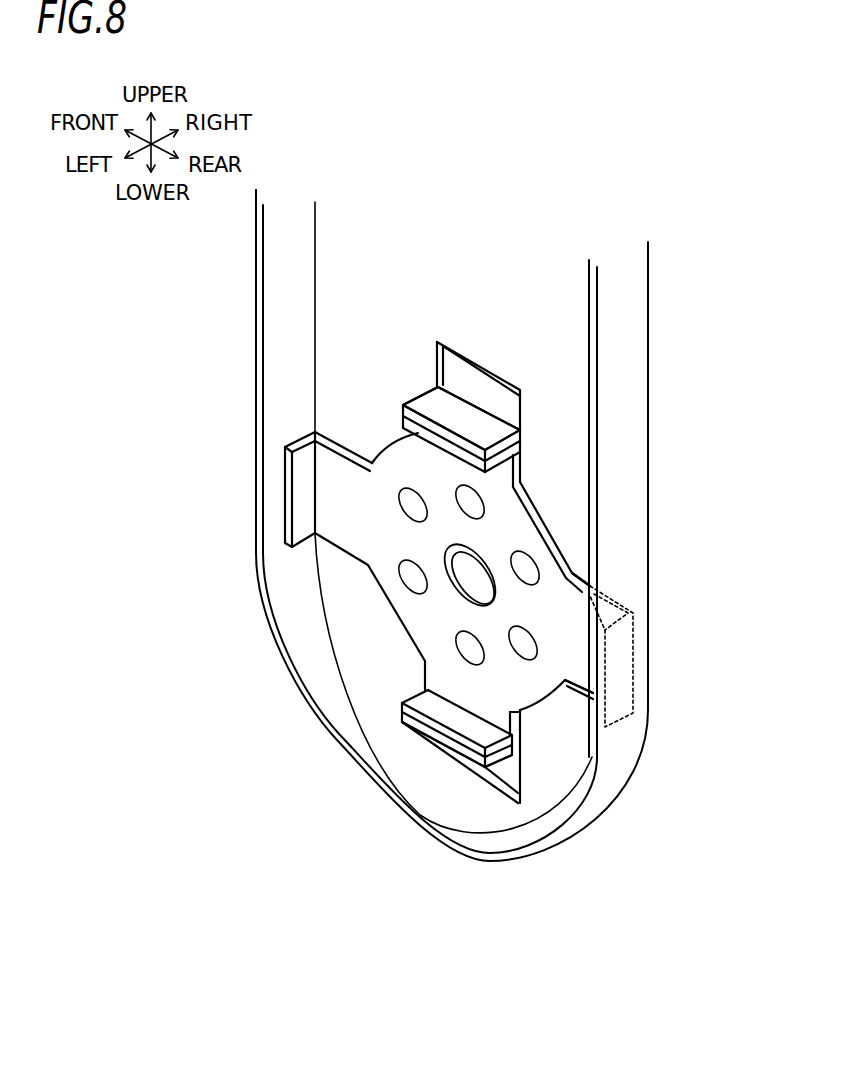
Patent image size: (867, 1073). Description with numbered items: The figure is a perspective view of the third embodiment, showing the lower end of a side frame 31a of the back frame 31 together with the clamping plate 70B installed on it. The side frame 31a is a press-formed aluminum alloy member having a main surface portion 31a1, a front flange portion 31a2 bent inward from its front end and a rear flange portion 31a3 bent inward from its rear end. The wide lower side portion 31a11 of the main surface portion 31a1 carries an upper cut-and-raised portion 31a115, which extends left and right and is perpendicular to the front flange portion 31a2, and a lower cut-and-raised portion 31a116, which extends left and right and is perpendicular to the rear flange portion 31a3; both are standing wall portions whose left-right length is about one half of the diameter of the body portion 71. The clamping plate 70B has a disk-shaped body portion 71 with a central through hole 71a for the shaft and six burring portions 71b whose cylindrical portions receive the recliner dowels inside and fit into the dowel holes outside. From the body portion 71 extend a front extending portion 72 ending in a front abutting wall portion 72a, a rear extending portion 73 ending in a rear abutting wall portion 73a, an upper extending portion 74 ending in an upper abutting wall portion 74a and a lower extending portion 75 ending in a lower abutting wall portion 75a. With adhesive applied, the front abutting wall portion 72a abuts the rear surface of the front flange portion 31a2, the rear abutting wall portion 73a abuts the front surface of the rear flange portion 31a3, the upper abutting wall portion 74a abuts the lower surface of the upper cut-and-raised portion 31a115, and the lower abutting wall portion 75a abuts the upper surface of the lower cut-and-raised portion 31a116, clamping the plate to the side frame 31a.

The back frame 31 is at (464, 552).
The side frame 31a is at (648, 362).
The main surface portion 31a1 is at (533, 337).
The front flange portion 31a2 is at (258, 293).
The rear flange portion 31a3 is at (632, 410).
The lower side portion 31a11 is at (348, 385).
The upper cut-and-raised portion 31a115 is at (463, 418).
The lower cut-and-raised portion 31a116 is at (500, 760).
The clamping plate 70B is at (513, 518).
The body portion 71 is at (537, 547).
The through hole 71a is at (458, 595).
The burring portion 71b is at (537, 643).
The front extending portion 72 is at (348, 555).
The front abutting wall portion 72a is at (302, 498).
The rear extending portion 73 is at (593, 752).
The rear abutting wall portion 73a is at (622, 670).
The upper extending portion 74 is at (517, 467).
The upper abutting wall portion 74a is at (403, 420).
The lower extending portion 75 is at (525, 738).
The lower abutting wall portion 75a is at (440, 712).